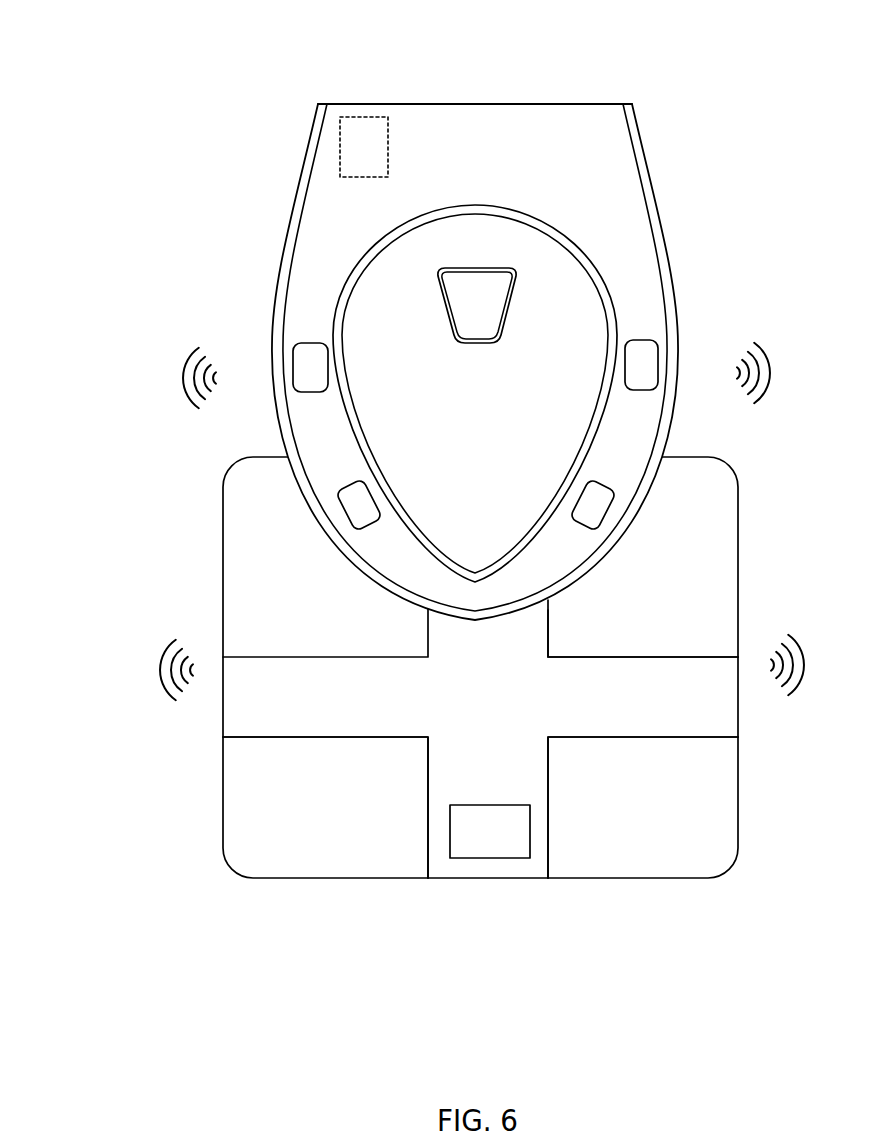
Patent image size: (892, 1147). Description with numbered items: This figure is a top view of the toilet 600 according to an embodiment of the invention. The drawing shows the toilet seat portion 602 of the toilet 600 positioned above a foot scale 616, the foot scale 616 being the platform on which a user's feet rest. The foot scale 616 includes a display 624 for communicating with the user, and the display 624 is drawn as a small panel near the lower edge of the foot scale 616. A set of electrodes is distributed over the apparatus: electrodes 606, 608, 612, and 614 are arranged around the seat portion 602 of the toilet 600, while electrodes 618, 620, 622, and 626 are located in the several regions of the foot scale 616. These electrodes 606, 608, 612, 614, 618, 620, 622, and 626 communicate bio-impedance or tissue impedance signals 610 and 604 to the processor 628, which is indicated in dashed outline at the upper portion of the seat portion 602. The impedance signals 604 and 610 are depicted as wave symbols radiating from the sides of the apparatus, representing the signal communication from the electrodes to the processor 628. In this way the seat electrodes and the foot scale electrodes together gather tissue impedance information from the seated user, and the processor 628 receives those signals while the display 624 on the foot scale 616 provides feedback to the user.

The toilet 600 is at (196, 91).
The toilet seat 602 is at (290, 219).
The bio-impedance or tissue impedance signals 604 is at (185, 365).
The electrode 606 is at (298, 372).
The electrode 608 is at (355, 510).
The bio-impedance or tissue impedance signals 610 is at (167, 643).
The electrode 612 is at (647, 355).
The electrode 614 is at (598, 512).
The foot scale 616 is at (500, 669).
The electrode 618 is at (252, 517).
The electrode 620 is at (708, 598).
The electrode 622 is at (350, 837).
The display 624 is at (493, 843).
The electrode 626 is at (660, 838).
The processor 628 is at (362, 133).